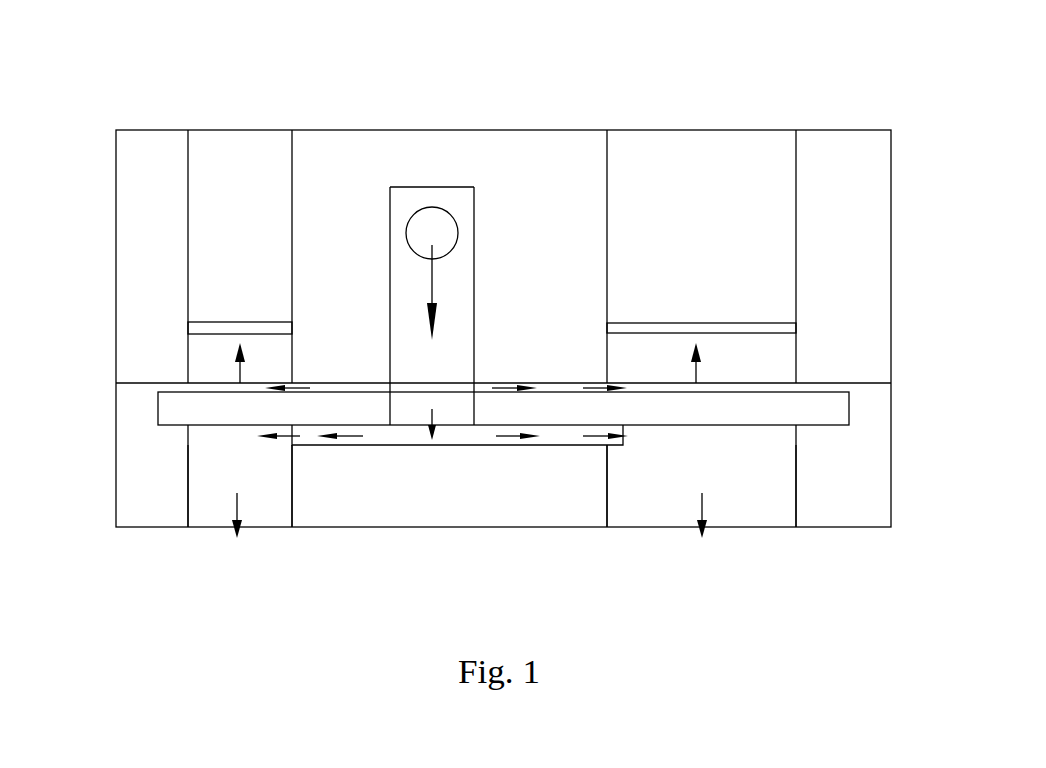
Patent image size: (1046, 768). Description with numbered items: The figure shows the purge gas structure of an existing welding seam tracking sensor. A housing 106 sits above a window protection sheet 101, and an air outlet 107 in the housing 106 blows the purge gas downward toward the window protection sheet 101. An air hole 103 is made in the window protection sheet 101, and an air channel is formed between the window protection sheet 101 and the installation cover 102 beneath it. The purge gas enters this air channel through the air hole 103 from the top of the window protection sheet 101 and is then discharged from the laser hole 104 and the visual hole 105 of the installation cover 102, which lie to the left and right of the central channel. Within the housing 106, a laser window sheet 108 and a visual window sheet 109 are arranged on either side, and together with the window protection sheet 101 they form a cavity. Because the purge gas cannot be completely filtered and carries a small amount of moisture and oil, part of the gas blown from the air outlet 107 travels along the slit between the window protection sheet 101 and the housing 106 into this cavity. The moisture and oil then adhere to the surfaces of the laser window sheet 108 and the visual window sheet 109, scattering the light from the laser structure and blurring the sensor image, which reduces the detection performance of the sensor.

The window protection sheet 101 is at (188, 410).
The installation cover 102 is at (400, 475).
The air hole 103 is at (452, 413).
The laser hole 104 is at (217, 473).
The visual hole 105 is at (685, 473).
The housing 106 is at (482, 163).
The air outlet 107 is at (438, 219).
The laser window sheet 108 is at (227, 328).
The visual window sheet 109 is at (763, 328).